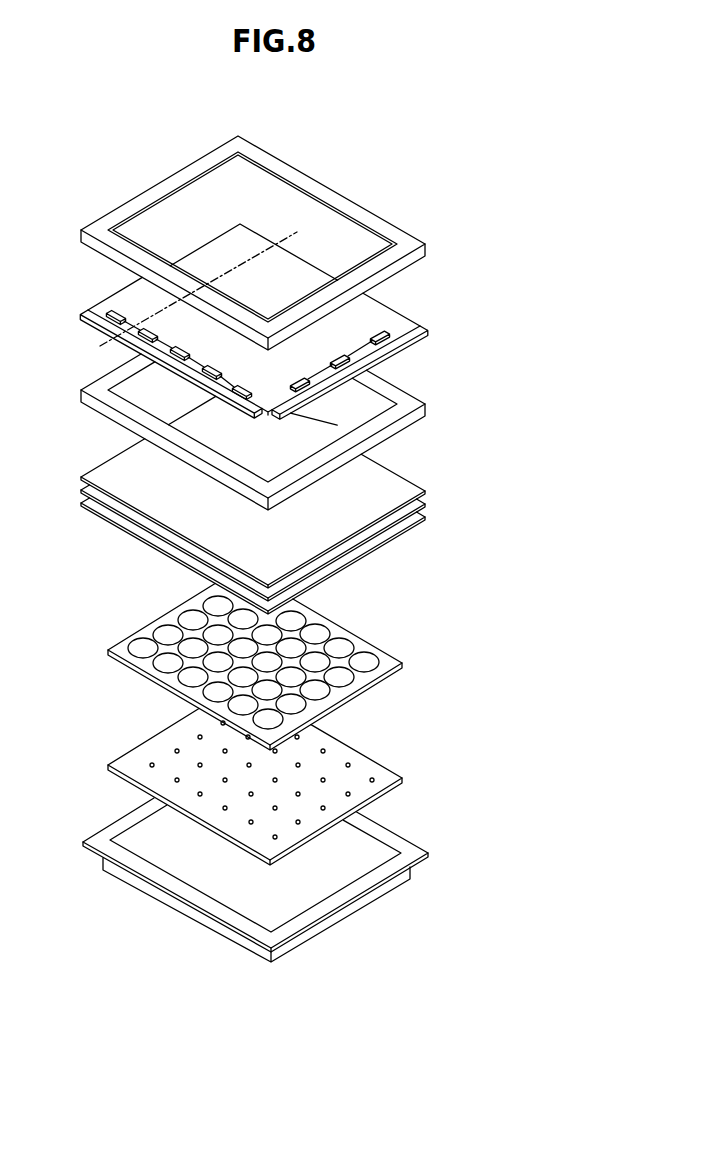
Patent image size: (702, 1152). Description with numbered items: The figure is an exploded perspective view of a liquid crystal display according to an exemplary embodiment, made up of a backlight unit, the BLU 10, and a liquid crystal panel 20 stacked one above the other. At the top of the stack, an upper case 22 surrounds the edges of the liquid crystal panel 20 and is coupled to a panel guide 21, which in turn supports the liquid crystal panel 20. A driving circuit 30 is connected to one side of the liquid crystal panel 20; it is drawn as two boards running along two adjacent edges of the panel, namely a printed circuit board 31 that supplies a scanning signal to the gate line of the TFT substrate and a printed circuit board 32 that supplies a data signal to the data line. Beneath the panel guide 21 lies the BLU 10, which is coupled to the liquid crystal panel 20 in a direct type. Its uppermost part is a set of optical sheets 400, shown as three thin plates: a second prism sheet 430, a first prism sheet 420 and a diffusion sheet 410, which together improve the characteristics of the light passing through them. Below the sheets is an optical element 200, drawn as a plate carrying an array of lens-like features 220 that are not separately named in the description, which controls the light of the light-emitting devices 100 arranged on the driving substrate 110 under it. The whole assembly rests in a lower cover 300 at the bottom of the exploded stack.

The BLU 10 is at (575, 922).
The upper case 22 is at (427, 246).
The liquid crystal panel 20 is at (362, 294).
The driving circuit 30 is at (283, 350).
The printed circuit board 31 is at (408, 312).
The printed circuit board 32 is at (90, 311).
The panel guide 21 is at (428, 407).
The optical sheets 400 is at (326, 505).
The second prism sheet 430 is at (427, 492).
The first prism sheet 420 is at (427, 505).
The diffusion sheet 410 is at (427, 518).
The optical element 200 is at (222, 667).
The lens pattern 220 is at (135, 632).
The light-emitting devices 100 is at (226, 778).
The driving substrate 110 is at (152, 732).
The lower cover 300 is at (418, 822).